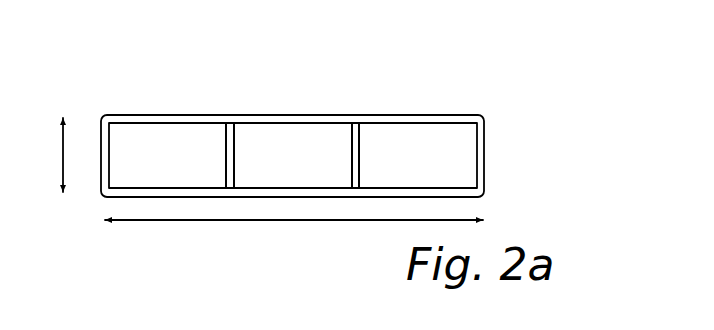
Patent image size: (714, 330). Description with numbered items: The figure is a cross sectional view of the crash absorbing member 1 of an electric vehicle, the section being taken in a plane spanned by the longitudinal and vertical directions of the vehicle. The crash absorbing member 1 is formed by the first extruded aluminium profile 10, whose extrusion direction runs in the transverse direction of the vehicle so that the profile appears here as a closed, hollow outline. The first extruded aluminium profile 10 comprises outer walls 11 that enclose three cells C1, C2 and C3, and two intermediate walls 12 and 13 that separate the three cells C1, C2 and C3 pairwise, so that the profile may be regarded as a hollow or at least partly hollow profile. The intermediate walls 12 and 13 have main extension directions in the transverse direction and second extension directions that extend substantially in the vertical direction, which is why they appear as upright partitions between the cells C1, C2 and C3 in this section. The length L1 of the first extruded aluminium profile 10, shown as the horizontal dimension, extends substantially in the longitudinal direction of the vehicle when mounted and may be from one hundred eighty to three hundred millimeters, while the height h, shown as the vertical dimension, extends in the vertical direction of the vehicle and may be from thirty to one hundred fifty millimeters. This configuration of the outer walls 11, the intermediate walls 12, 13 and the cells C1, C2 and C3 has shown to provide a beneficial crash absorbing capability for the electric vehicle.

The crash absorbing member 1 is at (276, 172).
The first extruded aluminium profile 10 is at (276, 172).
The outer walls 11 is at (142, 115).
The intermediate wall 12 is at (226, 153).
The intermediate wall 13 is at (359, 153).
The cell C1 is at (138, 172).
The cell C2 is at (280, 178).
The cell C3 is at (407, 177).
The height h is at (51, 155).
The length L1 is at (294, 240).